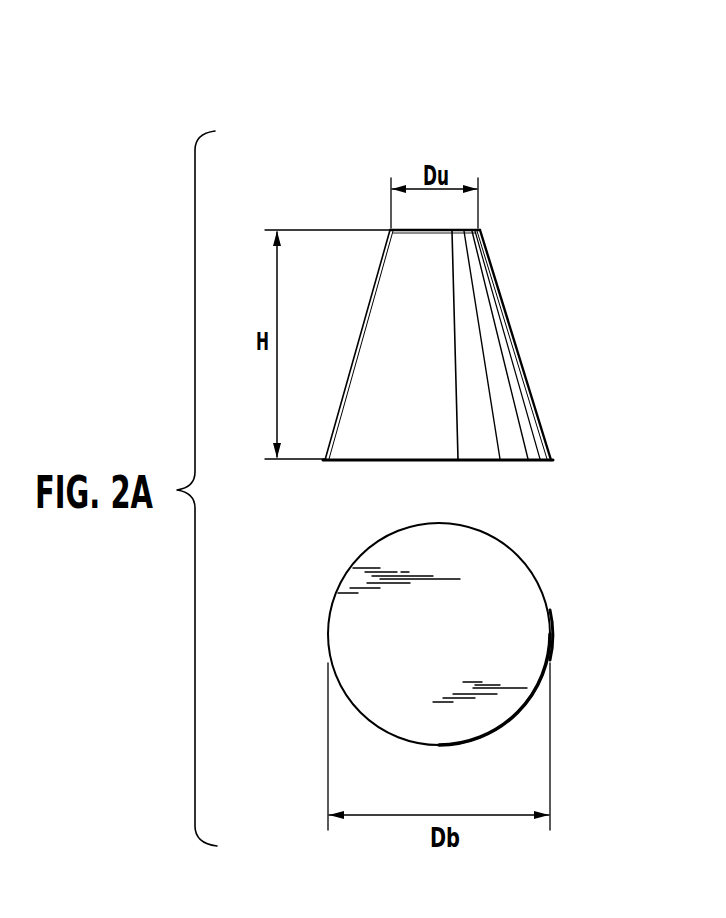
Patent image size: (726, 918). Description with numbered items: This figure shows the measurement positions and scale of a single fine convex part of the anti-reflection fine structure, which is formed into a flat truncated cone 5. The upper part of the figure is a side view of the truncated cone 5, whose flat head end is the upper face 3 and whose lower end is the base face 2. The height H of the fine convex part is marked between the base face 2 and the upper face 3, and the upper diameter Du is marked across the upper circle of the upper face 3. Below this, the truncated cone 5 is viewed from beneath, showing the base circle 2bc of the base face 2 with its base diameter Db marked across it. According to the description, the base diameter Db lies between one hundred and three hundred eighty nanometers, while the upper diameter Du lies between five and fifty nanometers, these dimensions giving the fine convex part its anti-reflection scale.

The truncated cone 5 is at (520, 148).
The upper face 3 is at (457, 230).
The base face 2 is at (523, 460).
The base circle 2bc is at (535, 618).